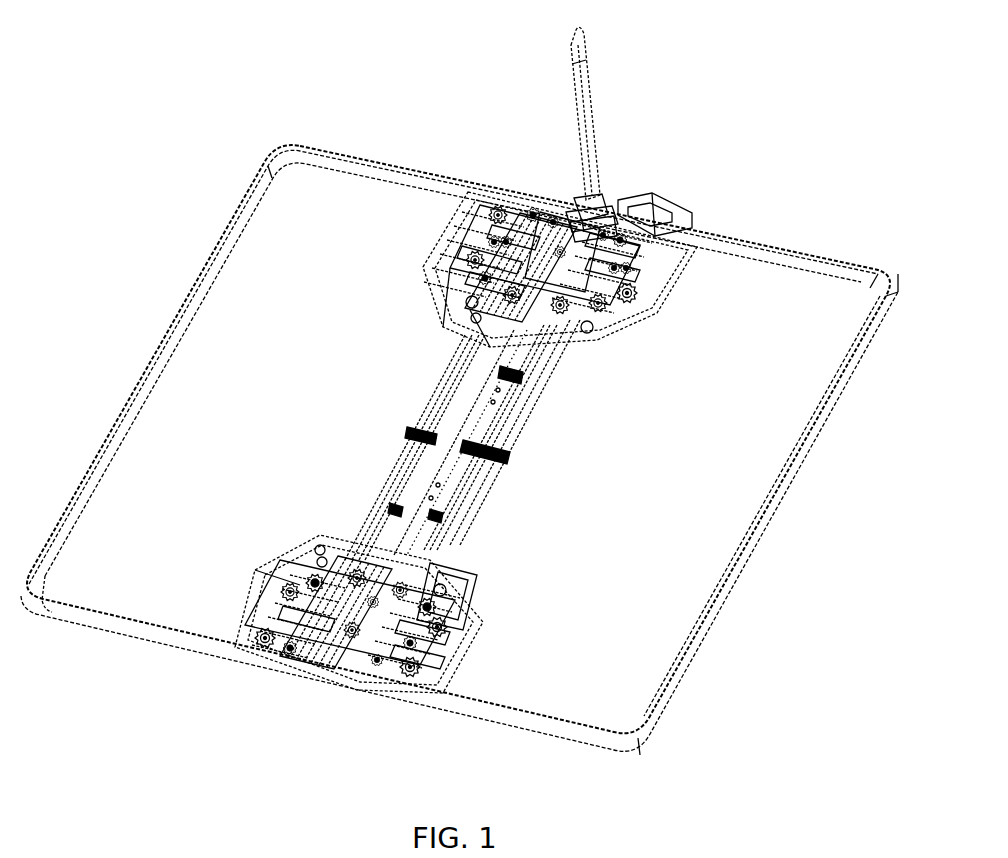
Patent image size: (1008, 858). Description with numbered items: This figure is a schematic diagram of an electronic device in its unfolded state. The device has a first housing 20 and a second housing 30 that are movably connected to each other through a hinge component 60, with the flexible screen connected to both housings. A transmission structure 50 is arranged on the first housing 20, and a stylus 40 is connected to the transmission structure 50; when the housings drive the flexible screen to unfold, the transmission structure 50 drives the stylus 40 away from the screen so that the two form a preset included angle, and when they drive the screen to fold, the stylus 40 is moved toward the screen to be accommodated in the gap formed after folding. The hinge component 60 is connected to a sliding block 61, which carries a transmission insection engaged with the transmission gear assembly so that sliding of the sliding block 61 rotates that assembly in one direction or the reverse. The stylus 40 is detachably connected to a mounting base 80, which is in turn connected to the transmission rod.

The first housing 20 is at (822, 258).
The second housing 30 is at (212, 243).
The stylus 40 is at (582, 115).
The transmission structure 50 is at (648, 218).
The hinge component 60 is at (566, 319).
The sliding block 61 is at (636, 252).
The mounting base 80 is at (582, 198).